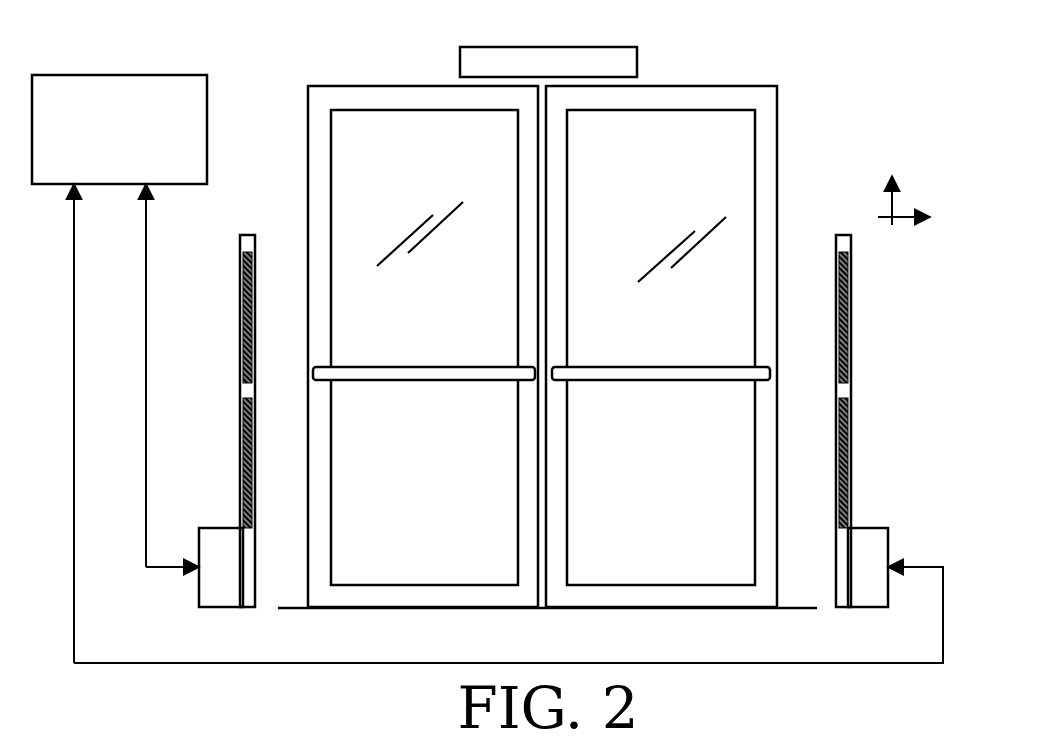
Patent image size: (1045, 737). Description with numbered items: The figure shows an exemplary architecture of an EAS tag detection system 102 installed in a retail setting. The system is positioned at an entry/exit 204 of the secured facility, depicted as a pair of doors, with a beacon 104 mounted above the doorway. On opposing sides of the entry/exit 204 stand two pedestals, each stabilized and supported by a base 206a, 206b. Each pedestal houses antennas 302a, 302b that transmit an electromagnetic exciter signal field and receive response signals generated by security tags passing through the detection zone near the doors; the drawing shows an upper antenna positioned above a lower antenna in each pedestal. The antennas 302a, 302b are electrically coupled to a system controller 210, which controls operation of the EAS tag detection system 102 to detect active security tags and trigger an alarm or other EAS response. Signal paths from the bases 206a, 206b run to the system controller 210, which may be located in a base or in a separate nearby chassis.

The EAS tag detection system 102 is at (857, 121).
The beacon 104 is at (548, 62).
The entry/exit 204 is at (780, 185).
The base 206a is at (222, 528).
The base 206b is at (880, 528).
The system controller 210 is at (487, 369).
The antenna 302a is at (241, 373).
The antenna 302b is at (851, 357).